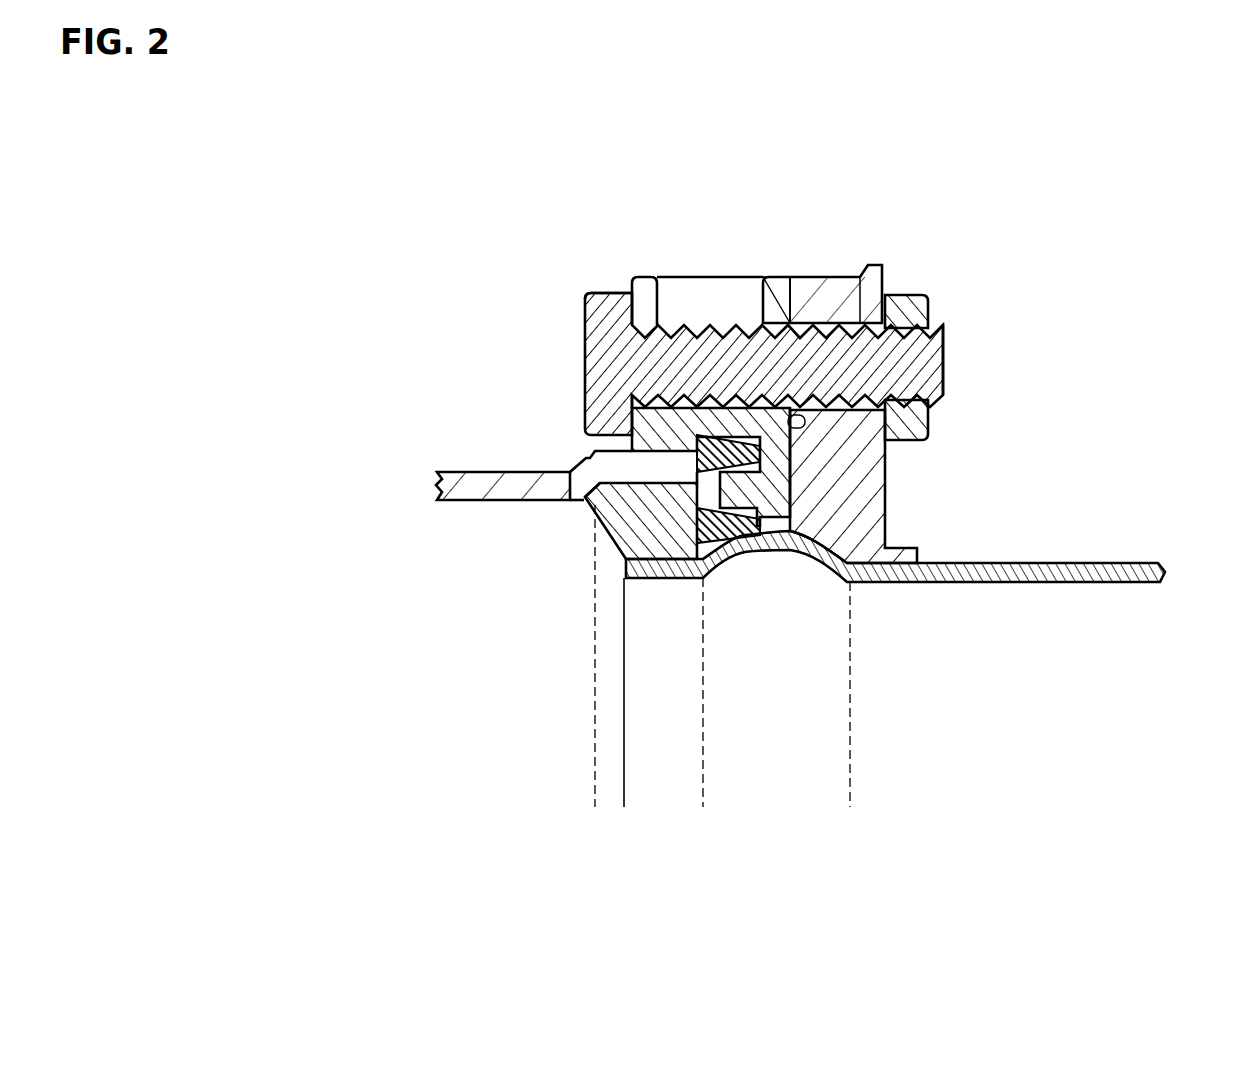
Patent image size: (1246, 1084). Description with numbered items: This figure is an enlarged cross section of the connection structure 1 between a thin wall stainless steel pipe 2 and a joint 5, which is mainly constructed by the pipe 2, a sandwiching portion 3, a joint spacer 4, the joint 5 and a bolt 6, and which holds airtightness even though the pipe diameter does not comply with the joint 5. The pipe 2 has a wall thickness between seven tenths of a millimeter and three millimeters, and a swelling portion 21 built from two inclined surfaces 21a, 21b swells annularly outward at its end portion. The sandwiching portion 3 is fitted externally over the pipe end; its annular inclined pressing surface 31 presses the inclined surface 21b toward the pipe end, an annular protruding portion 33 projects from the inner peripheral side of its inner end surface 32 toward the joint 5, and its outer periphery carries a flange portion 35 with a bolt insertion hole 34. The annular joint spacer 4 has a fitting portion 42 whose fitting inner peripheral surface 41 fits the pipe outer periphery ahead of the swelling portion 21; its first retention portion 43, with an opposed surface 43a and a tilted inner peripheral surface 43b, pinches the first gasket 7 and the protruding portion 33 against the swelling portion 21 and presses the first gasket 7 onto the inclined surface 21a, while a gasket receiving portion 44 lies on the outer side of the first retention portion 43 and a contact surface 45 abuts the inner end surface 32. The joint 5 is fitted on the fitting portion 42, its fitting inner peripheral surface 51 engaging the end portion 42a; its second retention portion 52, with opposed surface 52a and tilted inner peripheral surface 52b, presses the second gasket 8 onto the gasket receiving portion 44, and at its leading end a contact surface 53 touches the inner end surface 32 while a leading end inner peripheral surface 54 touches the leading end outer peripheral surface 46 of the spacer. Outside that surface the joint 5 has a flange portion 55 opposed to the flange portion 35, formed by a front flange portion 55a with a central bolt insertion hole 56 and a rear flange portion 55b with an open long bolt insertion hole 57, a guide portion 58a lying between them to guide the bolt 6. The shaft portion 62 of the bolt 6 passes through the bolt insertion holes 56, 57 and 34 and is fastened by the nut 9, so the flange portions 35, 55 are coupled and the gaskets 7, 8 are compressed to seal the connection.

The connection structure 1 is at (1048, 198).
The thin wall stainless steel pipe 2 is at (1143, 582).
The swelling portion 21 is at (1015, 677).
The inclined surface 21a is at (757, 565).
The inclined surface 21b is at (812, 572).
The sandwiching portion 3 is at (920, 555).
The inclined pressing surface 31 is at (900, 553).
The inner end surface 32 is at (840, 515).
The protruding portion 33 is at (850, 527).
The bolt insertion hole 34 is at (845, 318).
The flange portion 35 is at (862, 305).
The joint spacer 4 is at (600, 512).
The fitting inner peripheral surface 41 is at (655, 578).
The fitting portion 42 is at (610, 538).
The end portion 42a is at (596, 500).
The first retention portion 43 is at (722, 548).
The opposed surface 43a is at (703, 577).
The inner peripheral surface 43b is at (630, 690).
The gasket receiving portion 44 is at (775, 492).
The contact surface 45 is at (792, 470).
The leading end outer peripheral surface 46 is at (803, 425).
The joint 5 is at (457, 482).
The fitting inner peripheral surface 51 is at (596, 494).
The second retention portion 52 is at (596, 485).
The opposed surface 52a is at (598, 492).
The inner peripheral surface 52b is at (595, 489).
The contact surface 53 is at (610, 445).
The leading end inner peripheral surface 54 is at (625, 455).
The flange portion 55 is at (813, 170).
The front flange portion 55a is at (770, 277).
The rear flange portion 55b is at (660, 277).
The bolt insertion hole 56 is at (805, 292).
The bolt insertion hole 57 is at (647, 297).
The guide portion 58a is at (693, 300).
The bolt 6 is at (587, 347).
The shaft portion 62 is at (627, 330).
The first gasket 7 is at (735, 542).
The second gasket 8 is at (742, 468).
The nut 9 is at (928, 298).